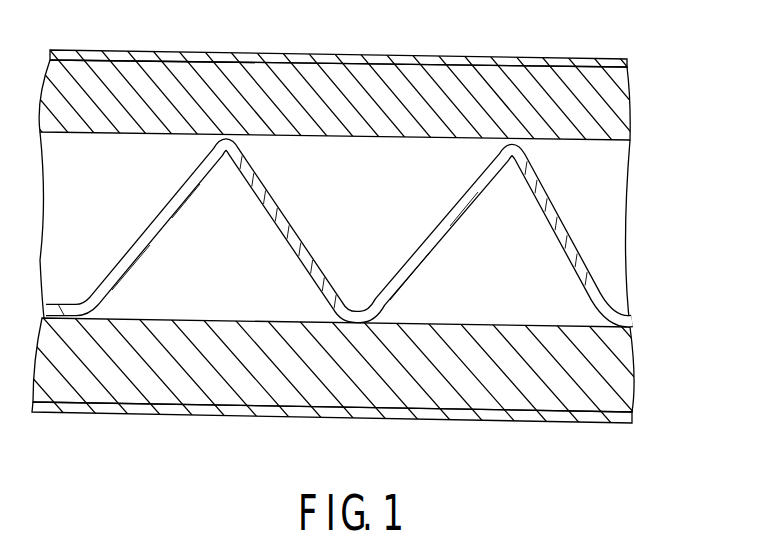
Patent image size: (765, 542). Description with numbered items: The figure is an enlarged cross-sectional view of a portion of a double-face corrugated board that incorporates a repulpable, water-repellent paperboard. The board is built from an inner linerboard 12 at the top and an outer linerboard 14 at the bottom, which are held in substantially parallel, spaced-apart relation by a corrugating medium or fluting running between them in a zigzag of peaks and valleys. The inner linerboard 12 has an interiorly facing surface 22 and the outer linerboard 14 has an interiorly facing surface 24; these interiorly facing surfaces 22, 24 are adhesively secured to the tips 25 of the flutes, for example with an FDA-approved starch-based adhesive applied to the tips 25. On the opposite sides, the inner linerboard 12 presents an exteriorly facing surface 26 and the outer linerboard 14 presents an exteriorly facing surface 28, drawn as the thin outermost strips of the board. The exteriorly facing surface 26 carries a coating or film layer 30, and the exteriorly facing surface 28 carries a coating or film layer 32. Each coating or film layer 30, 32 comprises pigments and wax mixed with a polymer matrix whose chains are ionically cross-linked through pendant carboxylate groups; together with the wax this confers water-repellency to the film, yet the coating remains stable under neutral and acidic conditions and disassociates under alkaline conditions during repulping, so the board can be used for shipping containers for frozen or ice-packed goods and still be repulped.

The inner linerboard 12 is at (345, 76).
The outer linerboard 14 is at (354, 396).
The interiorly facing surface 22 is at (376, 136).
The interiorly facing surface 24 is at (339, 235).
The tips 25 is at (238, 144).
The exteriorly facing surface 26 is at (338, 39).
The exteriorly facing surface 28 is at (332, 439).
The coating or film layer 30 is at (375, 56).
The coating or film layer 32 is at (433, 415).